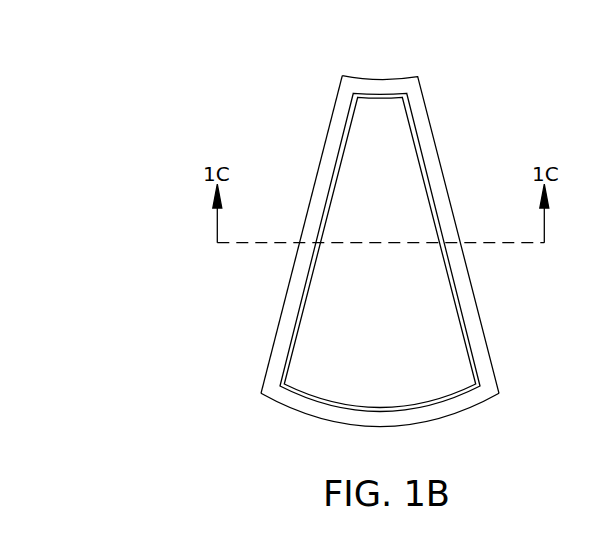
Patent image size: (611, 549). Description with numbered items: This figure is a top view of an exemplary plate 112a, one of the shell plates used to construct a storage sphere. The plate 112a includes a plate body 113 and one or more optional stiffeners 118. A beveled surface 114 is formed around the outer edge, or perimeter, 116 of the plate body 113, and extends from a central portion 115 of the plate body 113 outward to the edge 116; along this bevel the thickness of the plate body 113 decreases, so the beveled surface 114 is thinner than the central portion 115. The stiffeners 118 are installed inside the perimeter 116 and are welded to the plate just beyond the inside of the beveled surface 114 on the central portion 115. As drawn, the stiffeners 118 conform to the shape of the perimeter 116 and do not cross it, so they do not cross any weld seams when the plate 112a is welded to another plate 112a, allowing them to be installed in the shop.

The plate 112a is at (352, 260).
The plate body 113 is at (329, 419).
The beveled surface 114 is at (444, 178).
The central portion 115 is at (398, 304).
The outer edge (perimeter) 116 is at (475, 295).
The stiffeners 118 is at (386, 97).